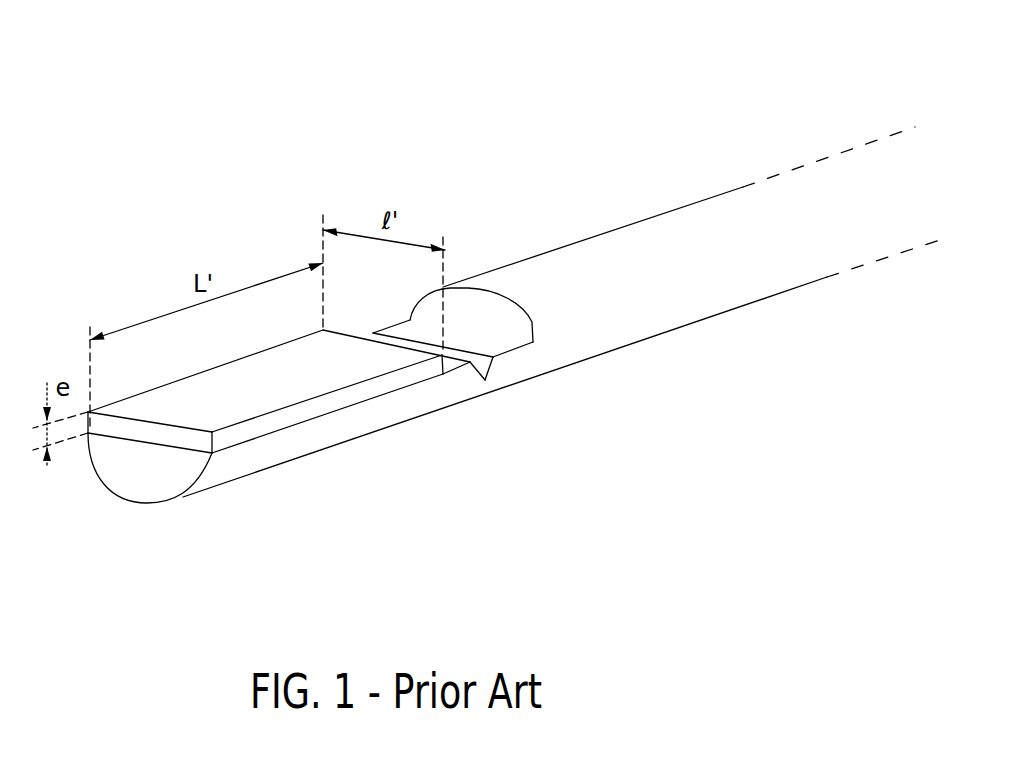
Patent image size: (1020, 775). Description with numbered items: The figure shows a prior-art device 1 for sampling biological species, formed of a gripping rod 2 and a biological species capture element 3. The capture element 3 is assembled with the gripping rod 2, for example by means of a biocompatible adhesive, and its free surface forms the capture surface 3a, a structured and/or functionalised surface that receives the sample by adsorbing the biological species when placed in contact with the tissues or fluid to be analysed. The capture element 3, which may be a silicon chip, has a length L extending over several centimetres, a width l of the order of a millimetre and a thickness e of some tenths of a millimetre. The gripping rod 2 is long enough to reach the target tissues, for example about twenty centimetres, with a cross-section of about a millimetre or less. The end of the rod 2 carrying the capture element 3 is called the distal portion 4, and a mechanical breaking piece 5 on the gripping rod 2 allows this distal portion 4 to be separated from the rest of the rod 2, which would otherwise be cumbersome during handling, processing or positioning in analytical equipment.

The device for sampling biological species 1 is at (576, 142).
The gripping rod 2 is at (670, 308).
The biological species capture element 3 is at (313, 410).
The capture surface 3a is at (124, 392).
The distal portion 4 is at (575, 448).
The mechanical breaking piece 5 is at (485, 380).